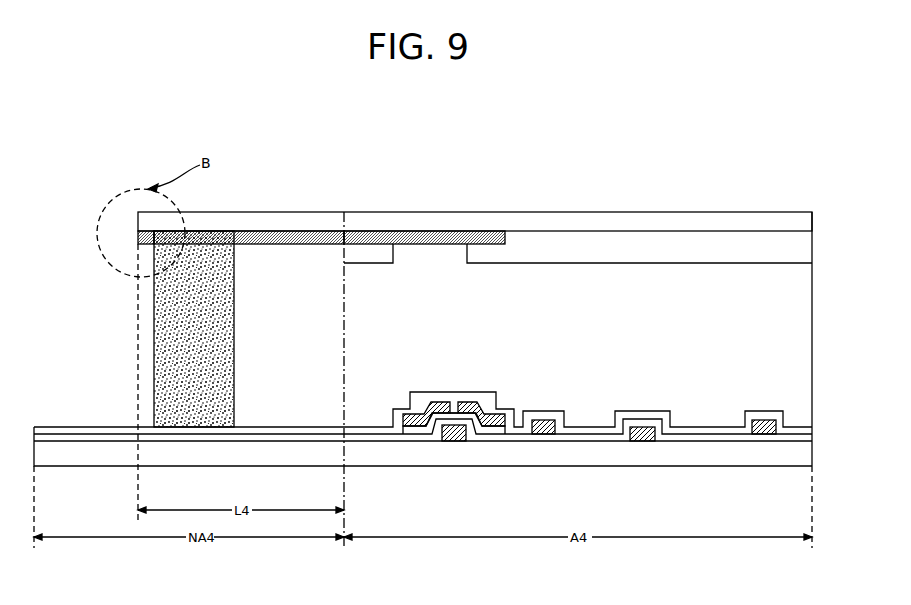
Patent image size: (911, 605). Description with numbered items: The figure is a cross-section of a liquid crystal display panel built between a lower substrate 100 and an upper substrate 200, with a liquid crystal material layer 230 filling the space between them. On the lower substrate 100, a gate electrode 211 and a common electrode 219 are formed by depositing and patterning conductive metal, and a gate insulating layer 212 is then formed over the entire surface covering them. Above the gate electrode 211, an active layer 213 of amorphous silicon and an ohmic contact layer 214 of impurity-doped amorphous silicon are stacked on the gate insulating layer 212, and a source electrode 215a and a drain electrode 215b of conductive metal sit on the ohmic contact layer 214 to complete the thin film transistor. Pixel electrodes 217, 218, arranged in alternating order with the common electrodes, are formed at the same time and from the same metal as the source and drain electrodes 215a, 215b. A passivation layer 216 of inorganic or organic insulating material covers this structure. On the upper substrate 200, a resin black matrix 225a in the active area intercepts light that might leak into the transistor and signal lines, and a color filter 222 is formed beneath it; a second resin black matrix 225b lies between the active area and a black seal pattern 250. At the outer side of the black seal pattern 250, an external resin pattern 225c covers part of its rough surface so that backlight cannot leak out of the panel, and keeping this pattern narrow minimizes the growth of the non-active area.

The lower substrate 100 is at (707, 452).
The upper substrate 200 is at (490, 221).
The gate electrode 211 is at (450, 443).
The gate insulating layer 212 is at (62, 440).
The active layer 213 is at (493, 430).
The ohmic contact layer 214 is at (453, 400).
The source electrode 215a is at (433, 401).
The drain electrode 215b is at (477, 401).
The passivation layer 216 is at (108, 428).
The pixel electrode 217 is at (543, 419).
The pixel electrode 218 is at (767, 424).
The common electrode 219 is at (641, 435).
The color filter 222 is at (575, 240).
The resin black matrix 225a is at (402, 234).
The resin black matrix 225b is at (287, 240).
The external resin pattern 225c is at (140, 237).
The liquid crystal material layer 230 is at (812, 330).
The black seal pattern 250 is at (155, 340).